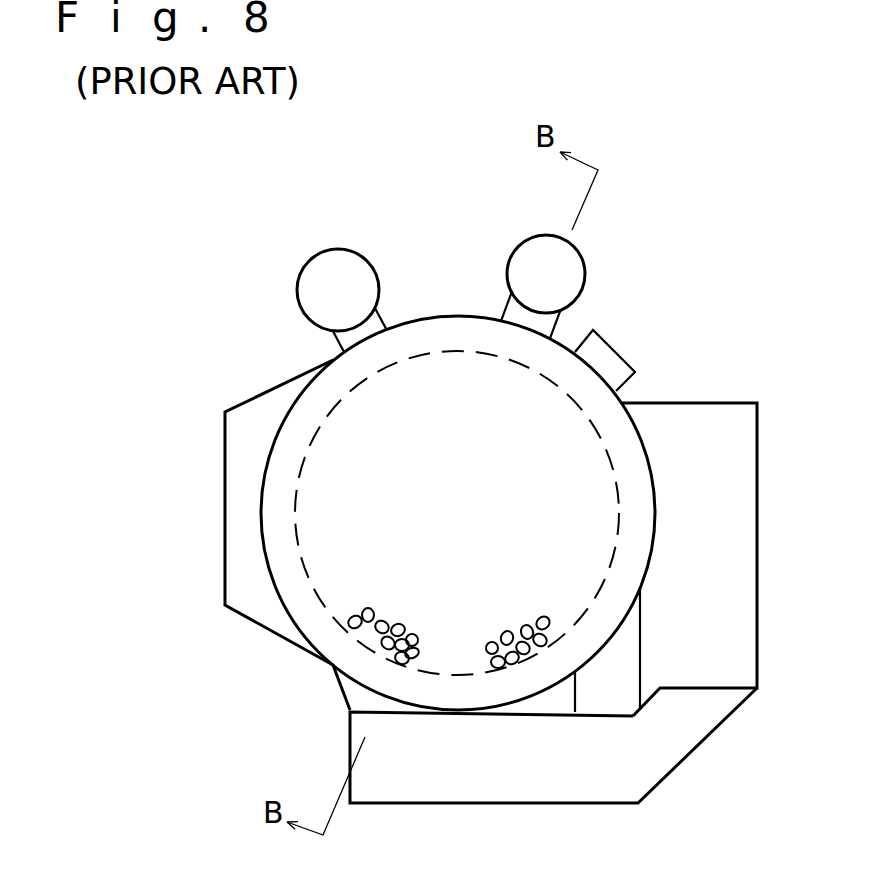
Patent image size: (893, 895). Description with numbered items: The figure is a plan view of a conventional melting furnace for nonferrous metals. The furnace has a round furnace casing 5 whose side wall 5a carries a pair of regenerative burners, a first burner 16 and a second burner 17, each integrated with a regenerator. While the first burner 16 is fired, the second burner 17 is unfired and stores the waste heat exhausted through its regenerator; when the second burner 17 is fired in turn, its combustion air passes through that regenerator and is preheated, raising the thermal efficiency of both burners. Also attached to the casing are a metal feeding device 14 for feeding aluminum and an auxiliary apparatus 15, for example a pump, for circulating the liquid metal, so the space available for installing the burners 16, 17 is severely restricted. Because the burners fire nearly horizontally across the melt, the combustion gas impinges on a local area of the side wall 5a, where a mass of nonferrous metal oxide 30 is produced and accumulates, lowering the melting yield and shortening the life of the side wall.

The furnace casing 5 is at (565, 338).
The side wall 5a is at (458, 330).
The metal feeding device 14 is at (483, 793).
The auxiliary apparatus 15 is at (238, 515).
The first burner 16 is at (332, 270).
The second burner 17 is at (548, 264).
The nonferrous metal oxide 30 is at (368, 612).